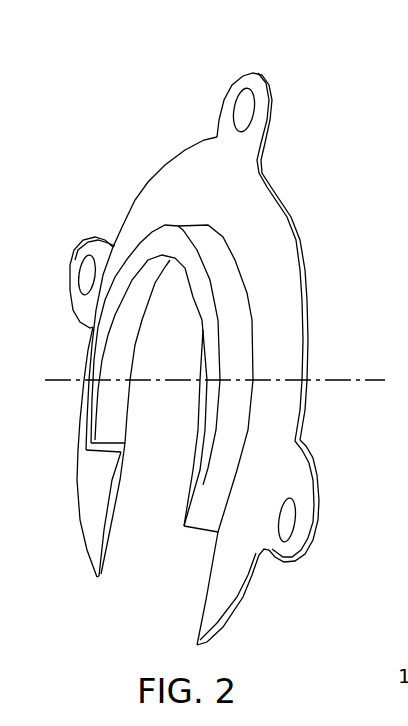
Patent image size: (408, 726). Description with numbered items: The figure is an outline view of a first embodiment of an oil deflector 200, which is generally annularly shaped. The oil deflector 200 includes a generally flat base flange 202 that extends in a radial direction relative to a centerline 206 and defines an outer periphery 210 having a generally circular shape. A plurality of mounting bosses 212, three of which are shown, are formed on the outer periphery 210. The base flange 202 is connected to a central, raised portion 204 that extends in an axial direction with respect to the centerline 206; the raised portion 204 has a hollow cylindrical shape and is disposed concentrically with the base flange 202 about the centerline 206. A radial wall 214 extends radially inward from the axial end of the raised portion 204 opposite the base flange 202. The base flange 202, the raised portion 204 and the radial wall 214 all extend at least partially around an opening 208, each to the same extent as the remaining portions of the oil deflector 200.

The oil deflector 200 is at (130, 386).
The base flange 202 is at (292, 315).
The raised portion 204 is at (275, 378).
The centerline 206 is at (72, 407).
The opening 208 is at (106, 547).
The outer periphery 210 is at (280, 542).
The mounting bosses 212 is at (236, 74).
The radial wall 214 is at (283, 428).